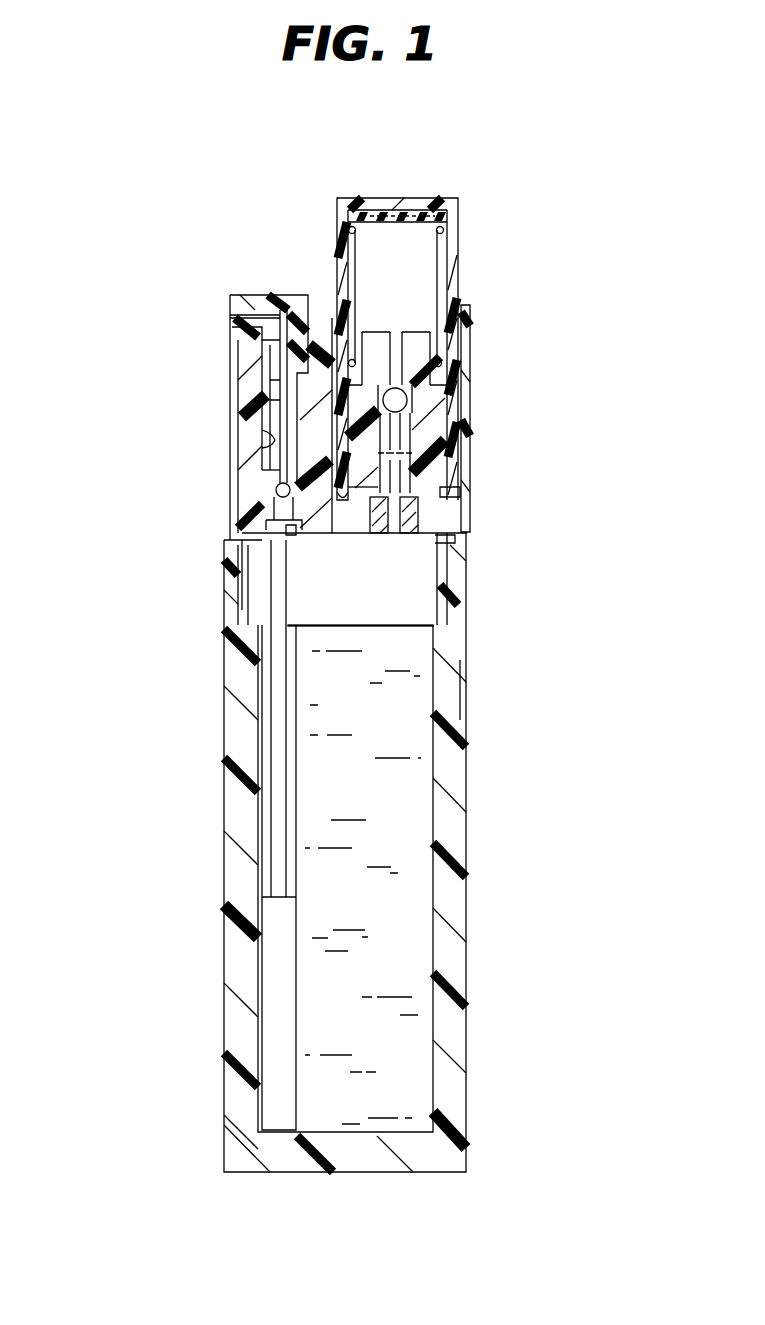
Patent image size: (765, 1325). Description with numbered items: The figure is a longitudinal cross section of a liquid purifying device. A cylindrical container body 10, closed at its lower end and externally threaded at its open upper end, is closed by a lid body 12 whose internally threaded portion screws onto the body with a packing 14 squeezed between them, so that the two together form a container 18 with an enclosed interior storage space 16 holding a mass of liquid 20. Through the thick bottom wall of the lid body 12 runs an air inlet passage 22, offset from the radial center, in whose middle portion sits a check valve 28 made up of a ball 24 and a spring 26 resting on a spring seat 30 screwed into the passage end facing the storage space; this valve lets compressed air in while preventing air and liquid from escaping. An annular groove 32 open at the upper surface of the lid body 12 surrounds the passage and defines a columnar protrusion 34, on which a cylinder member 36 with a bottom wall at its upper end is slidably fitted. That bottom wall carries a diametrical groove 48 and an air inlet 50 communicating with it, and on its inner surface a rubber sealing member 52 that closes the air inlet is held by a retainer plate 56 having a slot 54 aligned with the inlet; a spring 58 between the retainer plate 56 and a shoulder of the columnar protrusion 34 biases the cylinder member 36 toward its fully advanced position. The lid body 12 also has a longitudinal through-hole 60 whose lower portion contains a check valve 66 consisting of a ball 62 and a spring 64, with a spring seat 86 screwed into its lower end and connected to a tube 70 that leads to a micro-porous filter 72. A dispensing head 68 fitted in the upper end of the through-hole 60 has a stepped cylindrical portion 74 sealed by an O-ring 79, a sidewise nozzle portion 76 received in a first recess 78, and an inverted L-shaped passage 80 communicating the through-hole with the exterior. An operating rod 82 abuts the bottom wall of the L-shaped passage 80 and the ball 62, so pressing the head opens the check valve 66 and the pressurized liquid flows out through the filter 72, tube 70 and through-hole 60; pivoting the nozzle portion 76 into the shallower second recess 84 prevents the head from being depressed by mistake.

The container body 10 is at (475, 876).
The lid body 12 is at (212, 458).
The packing 14 is at (252, 572).
The interior storage space 16 is at (363, 887).
The container 18 is at (504, 688).
The liquid 20 is at (405, 1032).
The air inlet passage 22 is at (406, 392).
The ball 24 is at (420, 416).
The spring 26 is at (412, 500).
The check valve 28 is at (430, 440).
The spring seat 30 is at (420, 526).
The annular groove 32 is at (345, 500).
The columnar protrusion 34 is at (458, 489).
The cylinder member 36 is at (455, 272).
The groove 48 is at (393, 198).
The air inlet 50 is at (402, 210).
The sealing member 52 is at (450, 222).
The slot 54 is at (420, 223).
The retainer plate 56 is at (432, 230).
The spring 58 is at (444, 228).
The through-hole 60 is at (265, 432).
The ball 62 is at (275, 489).
The spring 64 is at (270, 522).
The check valve 66 is at (268, 500).
The dispensing head 68 is at (270, 276).
The tube 70 is at (278, 736).
The filter 72 is at (303, 1092).
The stepped cylindrical portion 74 is at (272, 362).
The nozzle portion 76 is at (262, 300).
The first recess 78 is at (248, 330).
The O-ring 79 is at (272, 386).
The L-shaped passage 80 is at (291, 312).
The operating rod 82 is at (270, 462).
The second recess 84 is at (242, 316).
The spring seat 86 is at (292, 538).